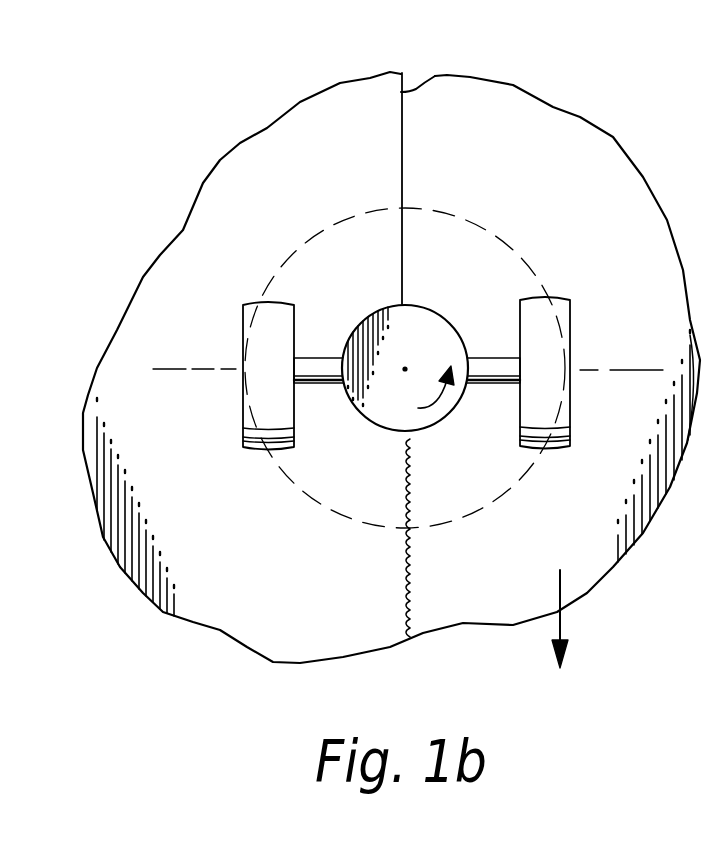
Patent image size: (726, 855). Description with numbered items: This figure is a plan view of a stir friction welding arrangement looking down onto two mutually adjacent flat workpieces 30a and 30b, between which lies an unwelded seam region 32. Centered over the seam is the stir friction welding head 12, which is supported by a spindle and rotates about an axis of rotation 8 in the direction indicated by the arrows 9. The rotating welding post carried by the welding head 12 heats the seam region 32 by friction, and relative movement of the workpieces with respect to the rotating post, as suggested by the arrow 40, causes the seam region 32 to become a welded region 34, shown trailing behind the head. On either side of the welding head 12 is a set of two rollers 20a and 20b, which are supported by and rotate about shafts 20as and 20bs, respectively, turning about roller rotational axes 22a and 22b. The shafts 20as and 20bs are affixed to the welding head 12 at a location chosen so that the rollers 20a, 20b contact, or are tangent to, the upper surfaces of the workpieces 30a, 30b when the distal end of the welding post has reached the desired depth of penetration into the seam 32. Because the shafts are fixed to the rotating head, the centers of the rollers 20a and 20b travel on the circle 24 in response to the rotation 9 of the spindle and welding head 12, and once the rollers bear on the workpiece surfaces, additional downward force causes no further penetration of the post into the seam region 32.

The axis of rotation 8 is at (405, 366).
The direction of rotation arrows 9 is at (418, 408).
The stir friction welding head 12 is at (433, 311).
The roller 20a is at (261, 301).
The roller 20b is at (554, 297).
The shaft 20as is at (324, 385).
The shaft 20bs is at (488, 385).
The roller rotational axis 22a is at (178, 368).
The roller rotational axis 22b is at (637, 370).
The circle 24 is at (496, 232).
The workpiece 30a is at (378, 158).
The workpiece 30b is at (480, 160).
The seam region 32 is at (436, 71).
The welded region 34 is at (413, 567).
The arrow 40 is at (563, 629).